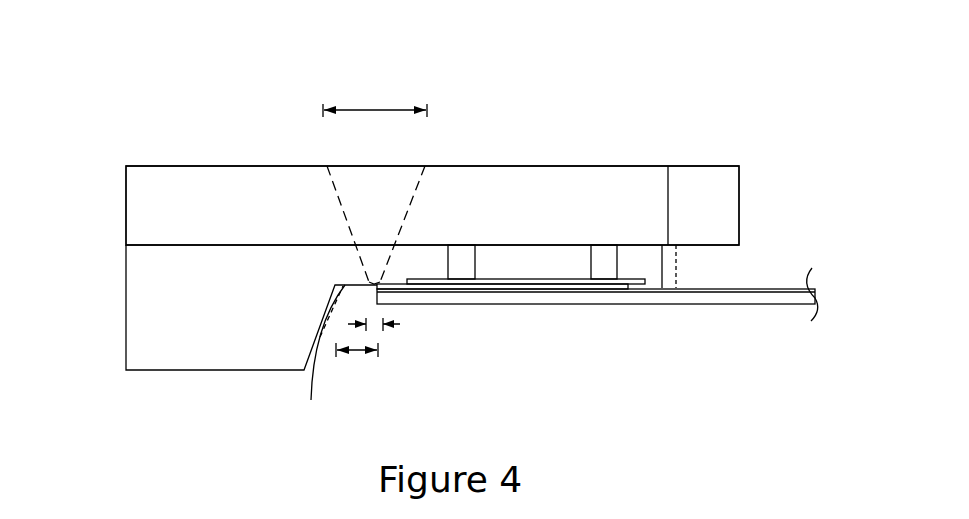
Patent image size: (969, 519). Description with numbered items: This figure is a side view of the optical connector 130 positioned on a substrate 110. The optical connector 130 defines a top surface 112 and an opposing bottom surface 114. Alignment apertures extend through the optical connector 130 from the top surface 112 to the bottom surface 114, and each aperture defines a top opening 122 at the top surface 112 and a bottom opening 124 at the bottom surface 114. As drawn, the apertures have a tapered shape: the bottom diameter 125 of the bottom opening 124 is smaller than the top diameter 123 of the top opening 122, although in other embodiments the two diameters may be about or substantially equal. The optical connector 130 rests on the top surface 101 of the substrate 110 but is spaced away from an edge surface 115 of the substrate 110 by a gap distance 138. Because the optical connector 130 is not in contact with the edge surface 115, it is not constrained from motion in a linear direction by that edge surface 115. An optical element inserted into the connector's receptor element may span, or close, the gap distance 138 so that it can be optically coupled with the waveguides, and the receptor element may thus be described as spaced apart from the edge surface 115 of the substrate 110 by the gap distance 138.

The optical connector 130 is at (172, 120).
The top surface 112 is at (605, 166).
The top opening 122 is at (390, 148).
The top diameter 123 is at (378, 110).
The bottom opening 124 is at (370, 270).
The top surface of the substrate 101 is at (763, 287).
The bottom surface 114 is at (377, 293).
The substrate 110 is at (817, 293).
The edge surface 115 is at (321, 358).
The bottom diameter 125 is at (397, 327).
The gap distance 138 is at (357, 352).